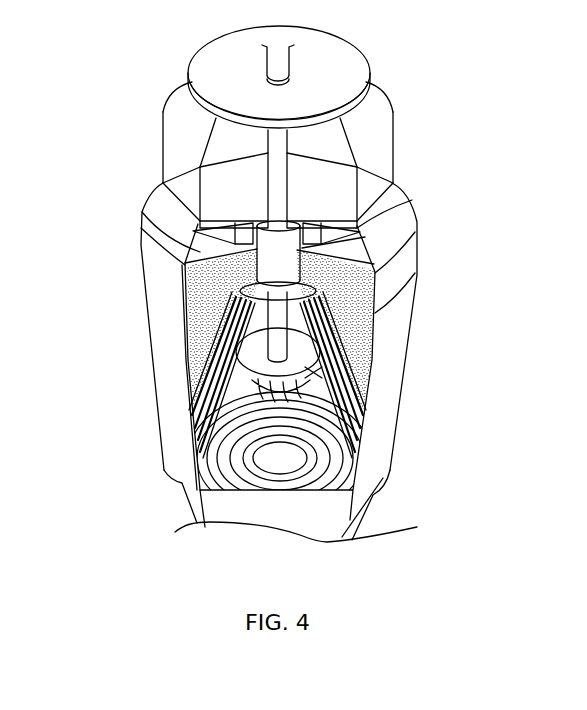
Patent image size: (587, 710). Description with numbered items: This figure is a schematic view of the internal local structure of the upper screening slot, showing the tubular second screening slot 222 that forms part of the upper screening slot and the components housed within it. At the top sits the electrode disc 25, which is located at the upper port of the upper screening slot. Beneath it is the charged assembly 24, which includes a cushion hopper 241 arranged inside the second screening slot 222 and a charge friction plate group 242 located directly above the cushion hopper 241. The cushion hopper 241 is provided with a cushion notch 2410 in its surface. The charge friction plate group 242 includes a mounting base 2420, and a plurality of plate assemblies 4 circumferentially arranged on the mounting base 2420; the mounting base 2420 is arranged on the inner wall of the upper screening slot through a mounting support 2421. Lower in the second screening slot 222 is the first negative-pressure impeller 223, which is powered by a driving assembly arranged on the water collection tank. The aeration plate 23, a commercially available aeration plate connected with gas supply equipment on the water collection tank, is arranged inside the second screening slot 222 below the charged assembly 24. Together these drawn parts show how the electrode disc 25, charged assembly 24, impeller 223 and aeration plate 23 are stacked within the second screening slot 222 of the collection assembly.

The electrode disc 25 is at (208, 82).
The mounting support 2421 is at (325, 237).
The mounting base 2420 is at (289, 268).
The charge friction plate group 242 is at (193, 260).
The charged assembly 24 is at (200, 333).
The cushion notch 2410 is at (192, 378).
The cushion hopper 241 is at (204, 430).
The aeration plate 23 is at (215, 482).
The plate assembly 4 is at (360, 303).
The first negative-pressure impeller 223 is at (362, 403).
The second screening slot 222 is at (383, 462).